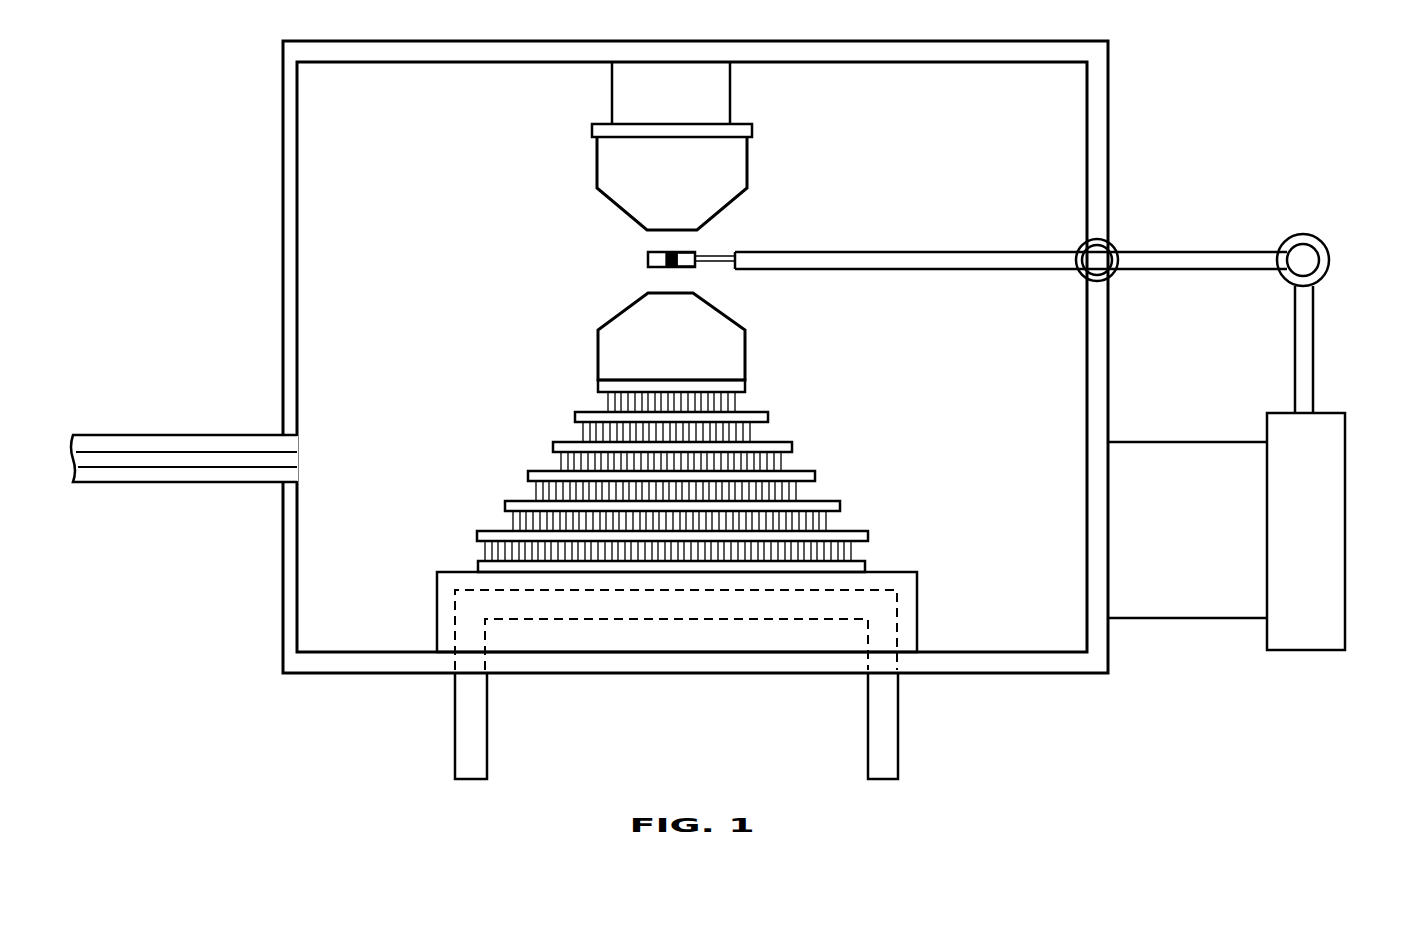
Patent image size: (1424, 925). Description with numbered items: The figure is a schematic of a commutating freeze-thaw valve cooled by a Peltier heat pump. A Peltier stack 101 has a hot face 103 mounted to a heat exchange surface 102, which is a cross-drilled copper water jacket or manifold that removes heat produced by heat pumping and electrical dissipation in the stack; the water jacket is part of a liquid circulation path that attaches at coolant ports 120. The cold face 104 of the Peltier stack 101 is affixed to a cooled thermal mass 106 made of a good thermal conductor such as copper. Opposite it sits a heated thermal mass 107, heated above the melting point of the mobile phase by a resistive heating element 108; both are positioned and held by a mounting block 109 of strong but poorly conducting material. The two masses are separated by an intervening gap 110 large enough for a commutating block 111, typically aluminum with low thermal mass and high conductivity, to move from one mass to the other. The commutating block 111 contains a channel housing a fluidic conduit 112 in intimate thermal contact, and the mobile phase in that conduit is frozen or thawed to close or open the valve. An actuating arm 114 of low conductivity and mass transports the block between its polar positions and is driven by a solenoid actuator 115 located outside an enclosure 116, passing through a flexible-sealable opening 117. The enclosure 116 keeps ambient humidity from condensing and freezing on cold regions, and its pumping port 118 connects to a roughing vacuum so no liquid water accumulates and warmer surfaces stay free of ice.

The Peltier stack 101 is at (548, 458).
The heat exchange surface 102 is at (918, 612).
The hot face 103 is at (871, 565).
The cold face 104 is at (746, 386).
The cooled thermal mass 106 is at (736, 320).
The heated thermal mass 107 is at (748, 175).
The resistive heating element 108 is at (762, 128).
The mounting block 109 is at (733, 88).
The intervening gap 110 is at (618, 238).
The commutating block 111 is at (640, 258).
The fluidic conduit 112 is at (672, 254).
The actuating arm 114 is at (905, 270).
The solenoid actuator 115 is at (1346, 520).
The enclosure 116 is at (1004, 675).
The flexible-sealable opening 117 is at (1112, 242).
The pumping port 118 is at (174, 434).
The coolant ports 120 is at (454, 760).